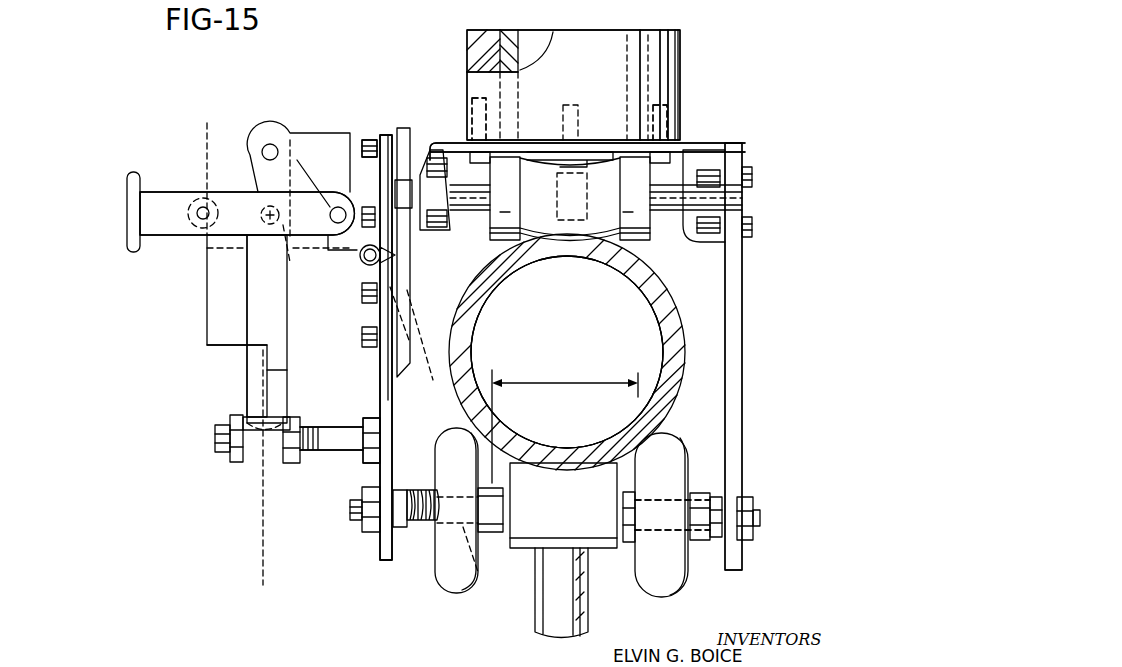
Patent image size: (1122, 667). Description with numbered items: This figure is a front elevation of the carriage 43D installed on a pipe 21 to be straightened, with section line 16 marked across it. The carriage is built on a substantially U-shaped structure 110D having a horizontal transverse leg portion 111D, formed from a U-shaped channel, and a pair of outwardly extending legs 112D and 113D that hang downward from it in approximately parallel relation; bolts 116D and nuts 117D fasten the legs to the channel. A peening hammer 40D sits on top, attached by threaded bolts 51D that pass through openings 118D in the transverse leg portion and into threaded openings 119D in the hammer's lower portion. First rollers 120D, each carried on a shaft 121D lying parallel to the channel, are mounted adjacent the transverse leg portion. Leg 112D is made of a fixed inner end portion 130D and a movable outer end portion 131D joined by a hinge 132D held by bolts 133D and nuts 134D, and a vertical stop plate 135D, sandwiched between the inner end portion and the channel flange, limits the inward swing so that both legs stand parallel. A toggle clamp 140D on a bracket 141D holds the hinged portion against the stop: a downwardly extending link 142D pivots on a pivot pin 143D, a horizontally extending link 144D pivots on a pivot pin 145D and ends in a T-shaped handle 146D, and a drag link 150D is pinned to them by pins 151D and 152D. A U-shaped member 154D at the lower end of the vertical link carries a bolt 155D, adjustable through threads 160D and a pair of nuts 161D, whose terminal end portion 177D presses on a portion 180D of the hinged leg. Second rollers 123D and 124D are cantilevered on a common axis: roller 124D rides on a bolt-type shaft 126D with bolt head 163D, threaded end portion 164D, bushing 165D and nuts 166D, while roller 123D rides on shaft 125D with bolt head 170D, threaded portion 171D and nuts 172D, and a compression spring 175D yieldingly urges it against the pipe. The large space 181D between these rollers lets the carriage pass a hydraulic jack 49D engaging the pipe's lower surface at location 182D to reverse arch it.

The section line 16- 16 is at (232, 133).
The pipe 21 is at (755, 285).
The peening hammer 40D is at (680, 27).
The carriage 43D is at (768, 58).
The hydraulic jack 49D is at (543, 618).
The threaded bolts 51D is at (470, 98).
The U-shaped structure 110D is at (730, 117).
The transverse leg portion 111D is at (693, 143).
The outwardly extending leg 112D is at (432, 287).
The outwardly extending leg 113D is at (745, 329).
The bolts 116D is at (358, 138).
The nuts 117D is at (455, 206).
The opening 118D is at (467, 133).
The threaded opening 119D is at (473, 118).
The roller 120D is at (523, 60).
The shaft 121D is at (742, 259).
The roller 123D is at (466, 580).
The roller 124D is at (683, 586).
The shaft 125D is at (468, 585).
The shaft 126D is at (682, 492).
The fixed inner end portion 130D is at (390, 134).
The movable outer end portion 131D is at (378, 390).
The hinge 132D is at (364, 274).
The bolts 133D is at (410, 130).
The nuts 134D is at (376, 140).
The plate 135D is at (457, 313).
The toggle clamp 140D is at (105, 182).
The bracket 141D is at (310, 137).
The downwardly extending link 142D is at (250, 353).
The pivot pin 143D is at (270, 144).
The horizontally extending link 144D is at (163, 230).
The pivot pin 145D is at (338, 204).
The T-shaped handle portion 146D is at (128, 208).
The drag link 150D is at (208, 240).
The pin 151D is at (200, 207).
The pin 152D is at (276, 230).
The U-shaped member 154D is at (247, 395).
The bolt 155D is at (343, 443).
The threads 160D is at (213, 435).
The nuts 161D is at (320, 404).
The bolt head 163D is at (628, 530).
The threaded end portion 164D is at (753, 523).
The bushing 165D is at (697, 538).
The nuts 166D is at (748, 496).
The bolt head 170D is at (493, 532).
The threaded portion 171D is at (353, 508).
The nuts 172D is at (378, 543).
The compression spring 175D is at (407, 533).
The terminal end portion 177D is at (378, 448).
The portion of leg portion 180D is at (363, 462).
The space 181D is at (577, 373).
The location 182D is at (553, 473).